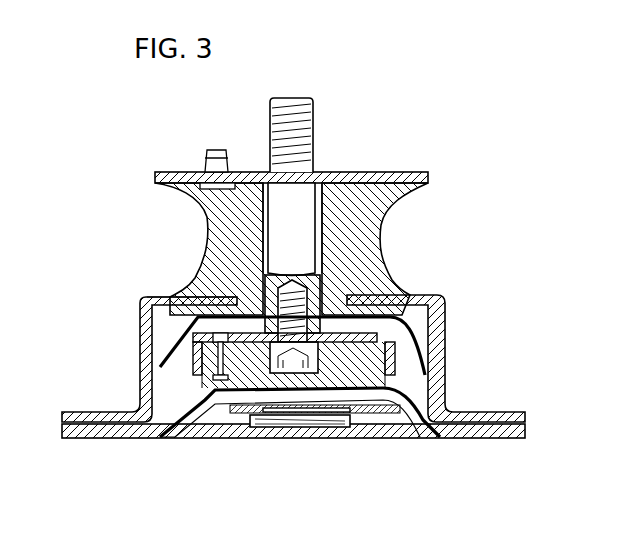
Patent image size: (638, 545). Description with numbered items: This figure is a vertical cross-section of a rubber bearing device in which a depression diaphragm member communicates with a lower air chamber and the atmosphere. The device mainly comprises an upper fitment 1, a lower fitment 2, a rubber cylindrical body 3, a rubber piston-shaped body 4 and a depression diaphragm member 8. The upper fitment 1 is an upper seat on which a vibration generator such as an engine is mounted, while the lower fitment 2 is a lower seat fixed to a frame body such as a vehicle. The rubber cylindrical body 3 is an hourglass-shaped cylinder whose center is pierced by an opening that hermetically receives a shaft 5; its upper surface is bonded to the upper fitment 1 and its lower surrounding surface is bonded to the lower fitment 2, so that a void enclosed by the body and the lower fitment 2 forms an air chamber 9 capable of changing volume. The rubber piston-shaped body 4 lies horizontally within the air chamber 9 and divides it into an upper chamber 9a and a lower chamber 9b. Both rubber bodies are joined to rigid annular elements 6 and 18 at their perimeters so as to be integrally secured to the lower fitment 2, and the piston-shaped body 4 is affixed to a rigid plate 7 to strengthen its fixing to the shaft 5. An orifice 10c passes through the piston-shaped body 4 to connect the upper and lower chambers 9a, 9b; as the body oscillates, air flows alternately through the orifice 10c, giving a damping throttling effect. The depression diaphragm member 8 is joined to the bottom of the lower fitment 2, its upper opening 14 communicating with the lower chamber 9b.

The upper fitment 1 is at (360, 176).
The lower fitment 2 is at (457, 440).
The rubber cylindrical body 3 is at (372, 232).
The rubber piston-shaped body 4 is at (400, 376).
The shaft 5 is at (303, 168).
The rigid annular element 6 is at (182, 297).
The rigid plate 7 is at (410, 300).
The depression diaphragm member 8 is at (345, 440).
The air chamber 9 is at (215, 440).
The upper chamber 9a is at (195, 323).
The lower chamber 9b is at (176, 440).
The orifice 10c is at (193, 352).
The upper opening 14 is at (277, 440).
The rigid annular element 18 is at (150, 375).